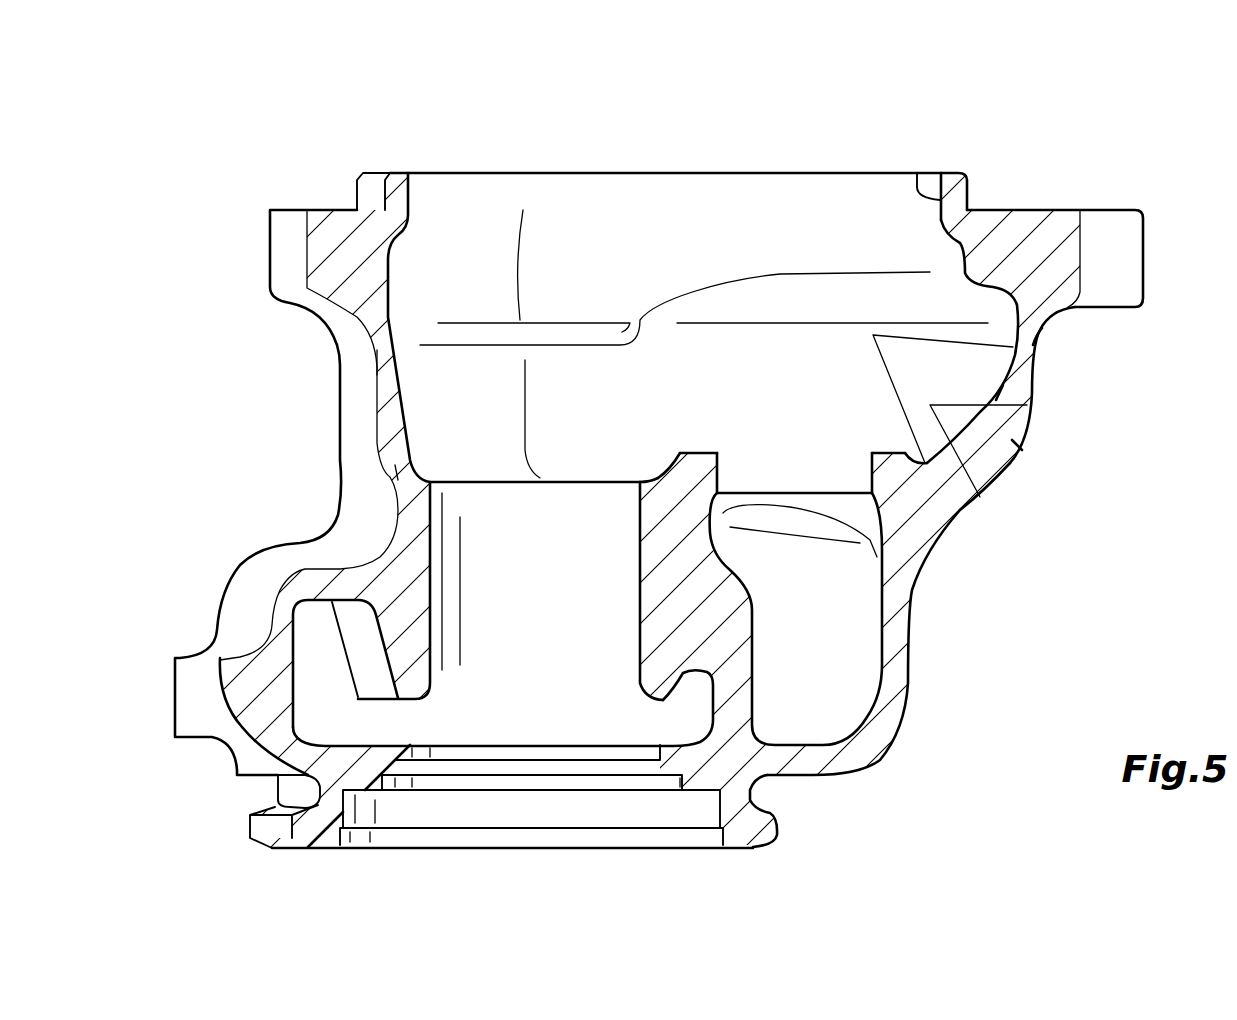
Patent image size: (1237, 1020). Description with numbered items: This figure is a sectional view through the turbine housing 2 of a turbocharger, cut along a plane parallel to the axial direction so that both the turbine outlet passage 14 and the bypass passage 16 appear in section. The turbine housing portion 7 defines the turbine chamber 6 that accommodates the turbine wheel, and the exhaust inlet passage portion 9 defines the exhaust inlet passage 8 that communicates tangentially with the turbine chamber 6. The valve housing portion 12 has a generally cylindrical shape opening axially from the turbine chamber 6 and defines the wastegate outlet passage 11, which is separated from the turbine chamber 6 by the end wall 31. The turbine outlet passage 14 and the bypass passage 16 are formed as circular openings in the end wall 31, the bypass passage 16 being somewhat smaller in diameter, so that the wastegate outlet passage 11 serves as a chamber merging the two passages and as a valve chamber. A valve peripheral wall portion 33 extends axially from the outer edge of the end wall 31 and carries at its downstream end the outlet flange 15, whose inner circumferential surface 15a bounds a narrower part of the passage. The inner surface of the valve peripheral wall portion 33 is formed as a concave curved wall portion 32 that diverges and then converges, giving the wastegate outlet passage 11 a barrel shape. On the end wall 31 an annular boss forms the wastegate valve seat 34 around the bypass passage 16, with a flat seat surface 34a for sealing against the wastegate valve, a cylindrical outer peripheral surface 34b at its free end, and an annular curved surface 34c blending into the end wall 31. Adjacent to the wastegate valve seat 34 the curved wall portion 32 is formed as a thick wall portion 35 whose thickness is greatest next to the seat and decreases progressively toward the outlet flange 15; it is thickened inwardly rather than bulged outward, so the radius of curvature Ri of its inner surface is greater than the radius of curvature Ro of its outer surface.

The turbine housing 2 is at (1058, 100).
The inner circumferential surface 15a is at (918, 172).
The wastegate outlet passage 11 is at (614, 247).
The outlet flange 15 is at (1120, 262).
The valve housing portion 12 is at (1032, 385).
The valve peripheral wall portion 33 is at (377, 362).
The curved wall portion 32 is at (397, 475).
The thick wall portion 35 is at (987, 427).
The end wall 31 is at (893, 483).
The wastegate valve seat 34 is at (879, 452).
The seat surface 34a is at (703, 452).
The outer peripheral surface 34b is at (680, 453).
The annular curved surface 34c is at (658, 478).
The radius of curvature of the inner surface Ri is at (882, 360).
The radius of curvature of the outer surface Ro is at (948, 404).
The bypass passage 16 is at (784, 487).
The turbine outlet passage 14 is at (527, 593).
The exhaust inlet passage 8 is at (308, 661).
The turbine chamber 6 is at (516, 733).
The exhaust inlet passage portion 9 is at (908, 633).
The turbine housing portion 7 is at (753, 778).